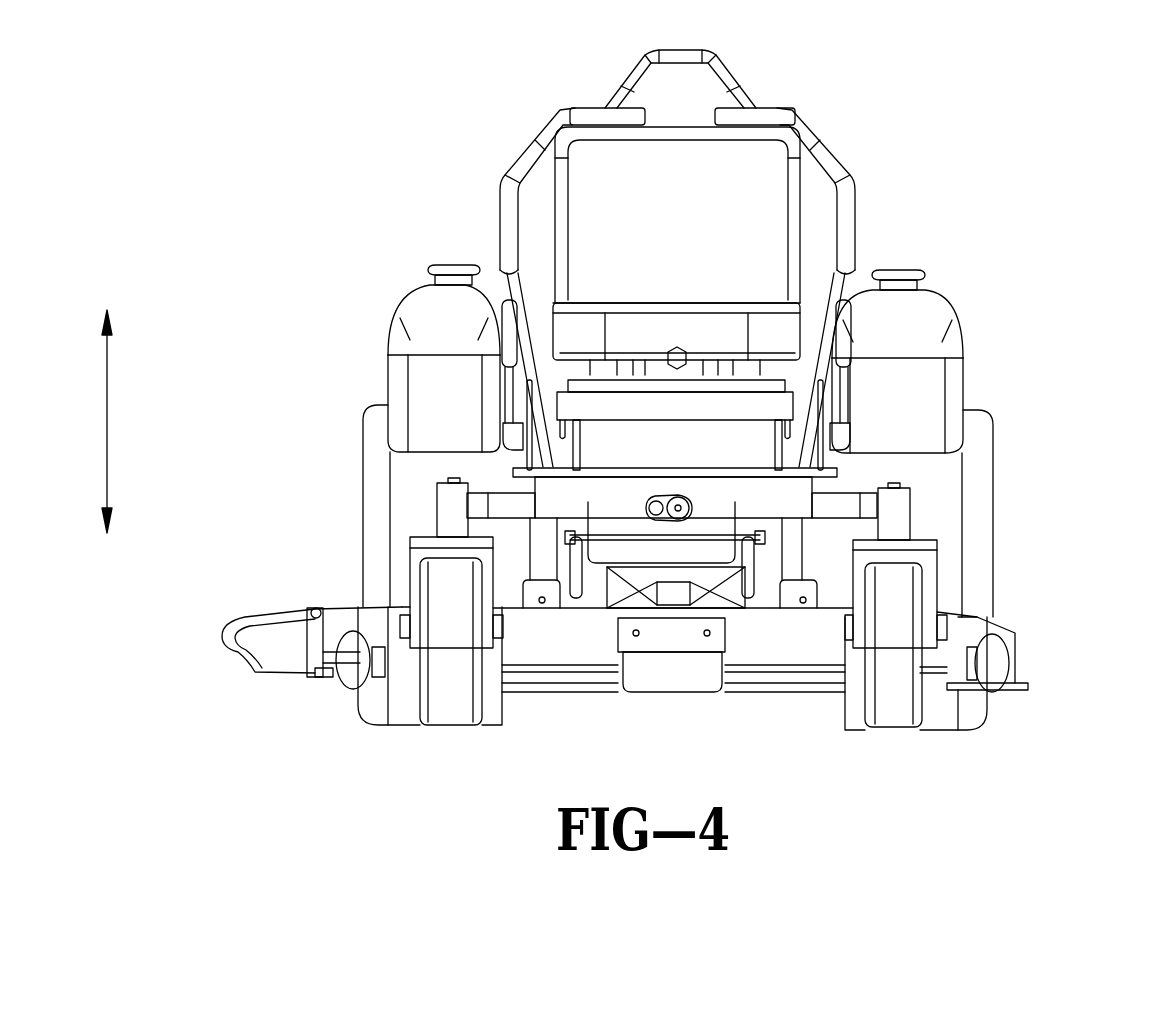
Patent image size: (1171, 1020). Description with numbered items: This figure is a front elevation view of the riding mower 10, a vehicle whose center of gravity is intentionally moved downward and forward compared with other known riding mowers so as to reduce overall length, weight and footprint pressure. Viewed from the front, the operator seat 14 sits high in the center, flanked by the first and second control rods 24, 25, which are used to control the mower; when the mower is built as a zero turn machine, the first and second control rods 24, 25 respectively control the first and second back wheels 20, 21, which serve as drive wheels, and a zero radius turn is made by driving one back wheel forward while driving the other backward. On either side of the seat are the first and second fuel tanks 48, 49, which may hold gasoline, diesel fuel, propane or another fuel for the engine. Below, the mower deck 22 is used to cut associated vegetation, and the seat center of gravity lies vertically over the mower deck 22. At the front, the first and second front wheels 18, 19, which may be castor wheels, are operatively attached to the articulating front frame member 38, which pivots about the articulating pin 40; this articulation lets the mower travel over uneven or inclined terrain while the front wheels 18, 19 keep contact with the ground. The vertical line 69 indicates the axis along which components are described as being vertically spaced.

The riding mower 10 is at (1062, 112).
The operator seat 14 is at (683, 84).
The first control rod 24 is at (543, 138).
The second control rod 25 is at (820, 152).
The first fuel tank 48 is at (430, 340).
The second fuel tank 49 is at (920, 343).
The first back wheel 20 is at (373, 461).
The second back wheel 21 is at (973, 468).
The mower deck 22 is at (1010, 636).
The first front wheel 18 is at (453, 713).
The second front wheel 19 is at (897, 718).
The articulating pin 40 is at (688, 522).
The articulating front frame member 38 is at (832, 510).
The line 69 is at (107, 418).